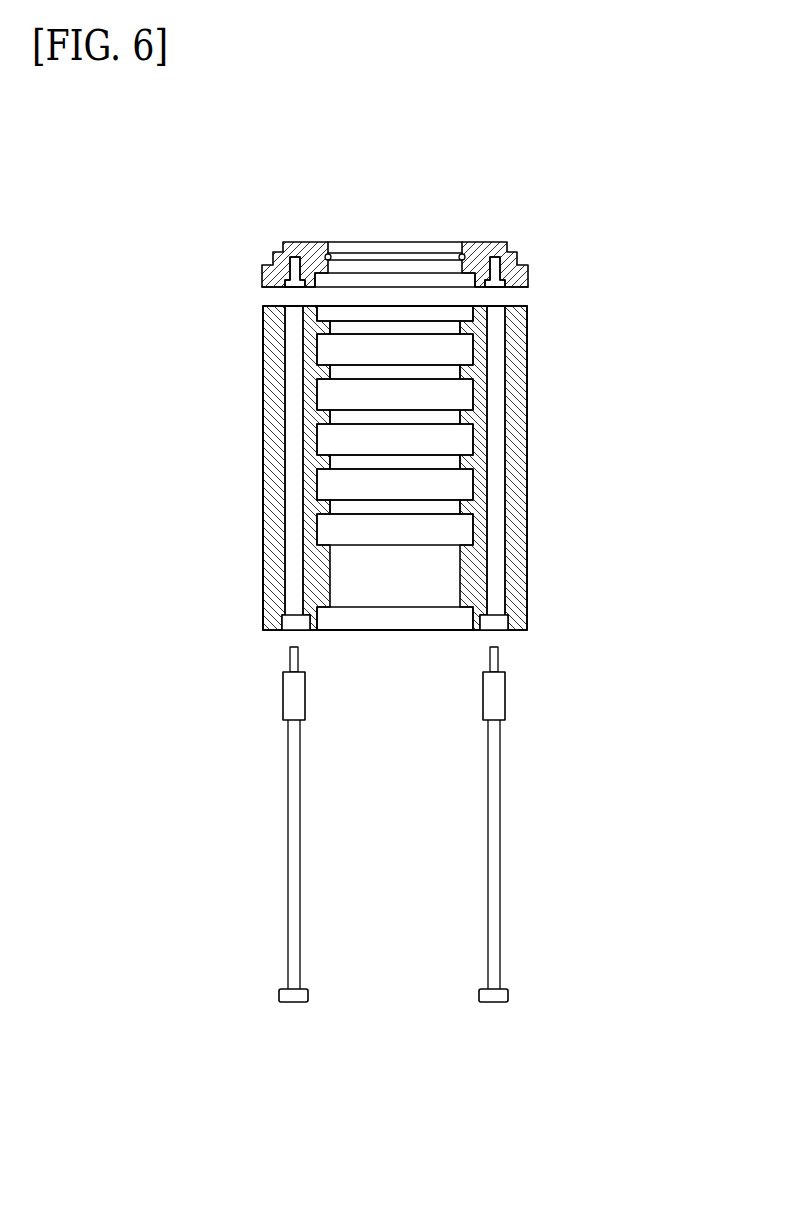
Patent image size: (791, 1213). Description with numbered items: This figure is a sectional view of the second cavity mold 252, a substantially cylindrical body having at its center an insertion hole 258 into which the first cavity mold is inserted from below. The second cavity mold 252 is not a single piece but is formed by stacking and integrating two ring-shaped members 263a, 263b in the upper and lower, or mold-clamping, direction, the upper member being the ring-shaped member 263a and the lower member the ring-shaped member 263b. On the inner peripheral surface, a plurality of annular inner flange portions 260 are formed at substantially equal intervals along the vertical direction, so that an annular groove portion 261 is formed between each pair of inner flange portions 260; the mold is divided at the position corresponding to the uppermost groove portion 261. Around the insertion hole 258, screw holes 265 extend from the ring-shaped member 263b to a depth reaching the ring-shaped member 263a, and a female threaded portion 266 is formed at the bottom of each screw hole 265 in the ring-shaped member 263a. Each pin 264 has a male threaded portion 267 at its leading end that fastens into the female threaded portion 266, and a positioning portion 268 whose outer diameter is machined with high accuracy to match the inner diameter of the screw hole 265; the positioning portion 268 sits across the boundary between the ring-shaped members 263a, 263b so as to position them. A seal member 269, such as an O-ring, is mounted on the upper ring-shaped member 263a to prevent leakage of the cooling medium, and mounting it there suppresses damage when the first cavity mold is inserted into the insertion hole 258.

The second cavity mold 252 is at (439, 403).
The ring-shaped member 263a is at (437, 232).
The ring-shaped member 263b is at (402, 463).
The inner flange portion 260 is at (327, 330).
The annular groove portion 261 is at (328, 352).
The screw hole 265 is at (293, 523).
The female threaded portion 266 is at (295, 257).
The seal member 269 is at (388, 252).
The male threaded portion 267 is at (290, 657).
The positioning portion 268 is at (295, 697).
The pin 264 is at (293, 1002).
The insertion hole 258 is at (388, 642).